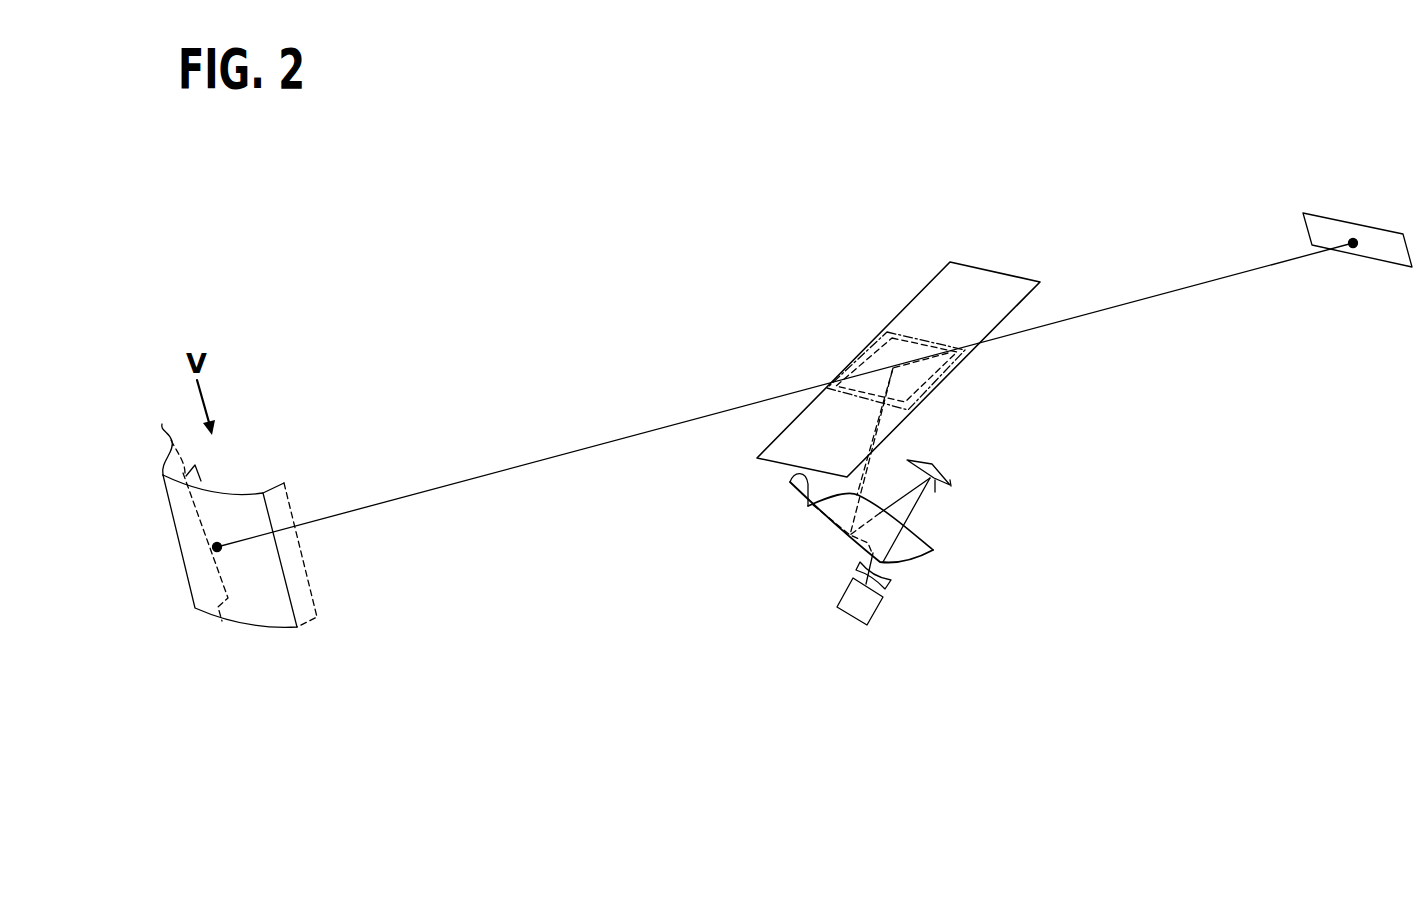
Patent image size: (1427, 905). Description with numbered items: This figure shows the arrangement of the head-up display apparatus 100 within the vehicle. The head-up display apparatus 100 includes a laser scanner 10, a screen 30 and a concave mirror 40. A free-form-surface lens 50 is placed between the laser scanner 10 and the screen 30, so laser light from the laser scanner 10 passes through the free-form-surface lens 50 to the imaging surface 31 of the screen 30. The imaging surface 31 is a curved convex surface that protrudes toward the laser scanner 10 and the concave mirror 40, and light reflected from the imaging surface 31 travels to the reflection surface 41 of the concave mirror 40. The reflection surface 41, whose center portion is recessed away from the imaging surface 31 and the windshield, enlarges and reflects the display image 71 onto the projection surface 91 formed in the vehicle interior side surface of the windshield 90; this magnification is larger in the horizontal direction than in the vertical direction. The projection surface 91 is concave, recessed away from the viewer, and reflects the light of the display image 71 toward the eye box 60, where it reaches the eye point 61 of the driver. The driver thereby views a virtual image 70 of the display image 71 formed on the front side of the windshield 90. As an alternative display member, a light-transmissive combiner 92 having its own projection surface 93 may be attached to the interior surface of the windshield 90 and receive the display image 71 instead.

The laser scanner 10 is at (873, 625).
The screen 30 is at (932, 465).
The imaging surface 31 is at (935, 492).
The concave mirror 40 is at (934, 552).
The reflection surface 41 is at (793, 485).
The free-form-surface lens 50 is at (895, 582).
The eye box 60 is at (1322, 215).
The eye point 61 is at (1355, 238).
The virtual image 70 is at (162, 426).
The display image 71 is at (950, 486).
The windshield 90 is at (897, 312).
The projection surface 91 is at (926, 389).
The combiner 92 is at (962, 339).
The projection surface 93 is at (953, 381).
The head-up display apparatus 100 is at (806, 574).